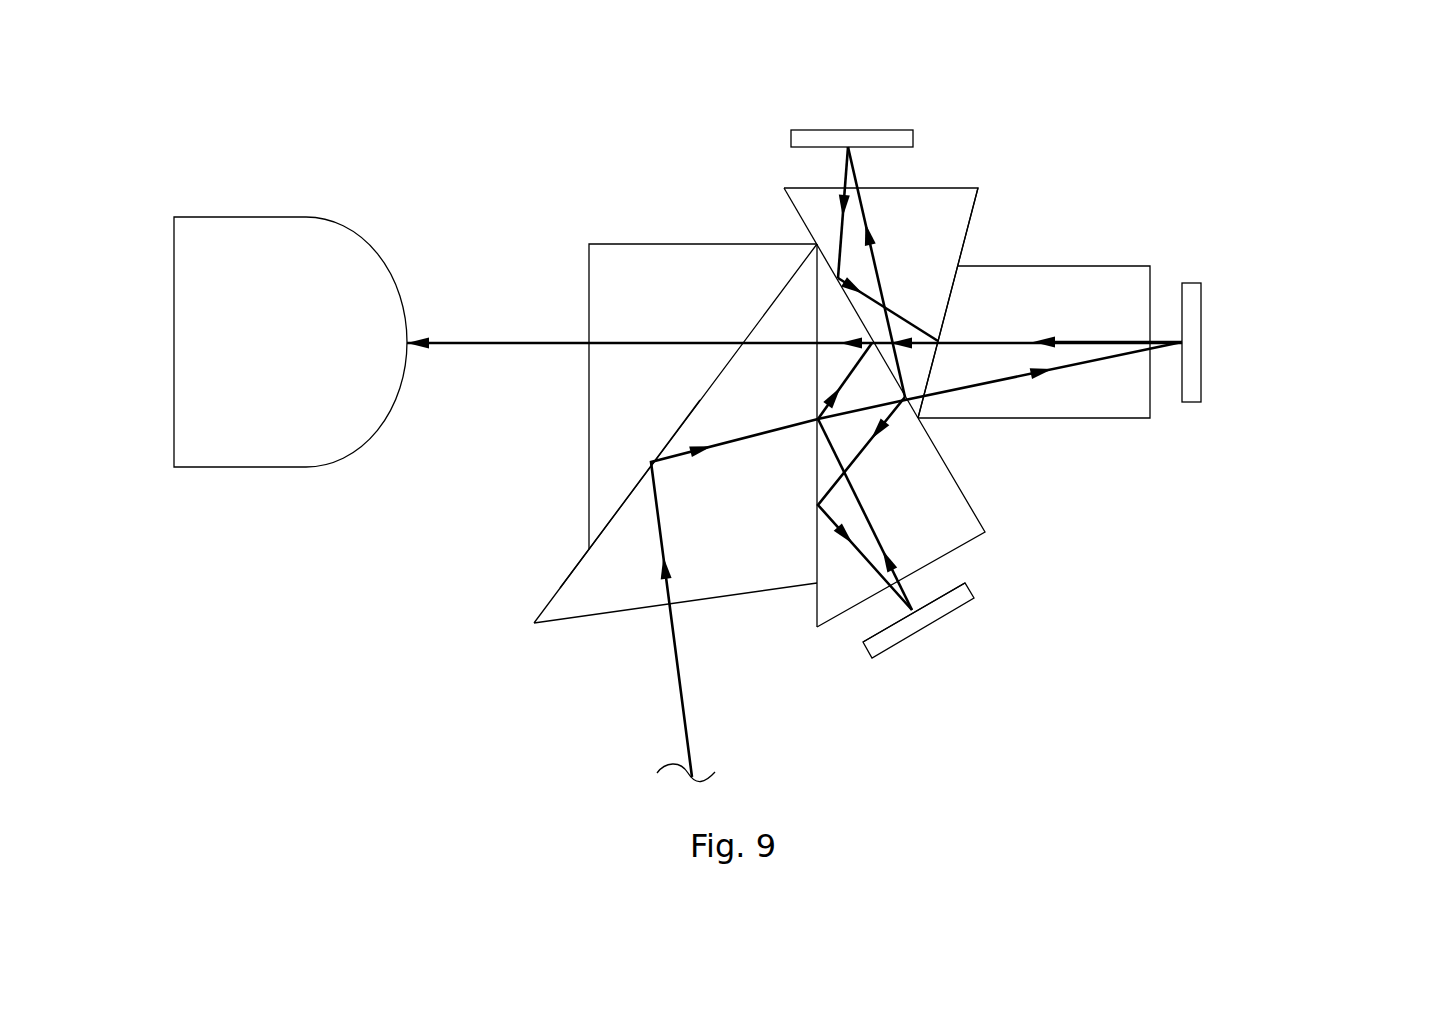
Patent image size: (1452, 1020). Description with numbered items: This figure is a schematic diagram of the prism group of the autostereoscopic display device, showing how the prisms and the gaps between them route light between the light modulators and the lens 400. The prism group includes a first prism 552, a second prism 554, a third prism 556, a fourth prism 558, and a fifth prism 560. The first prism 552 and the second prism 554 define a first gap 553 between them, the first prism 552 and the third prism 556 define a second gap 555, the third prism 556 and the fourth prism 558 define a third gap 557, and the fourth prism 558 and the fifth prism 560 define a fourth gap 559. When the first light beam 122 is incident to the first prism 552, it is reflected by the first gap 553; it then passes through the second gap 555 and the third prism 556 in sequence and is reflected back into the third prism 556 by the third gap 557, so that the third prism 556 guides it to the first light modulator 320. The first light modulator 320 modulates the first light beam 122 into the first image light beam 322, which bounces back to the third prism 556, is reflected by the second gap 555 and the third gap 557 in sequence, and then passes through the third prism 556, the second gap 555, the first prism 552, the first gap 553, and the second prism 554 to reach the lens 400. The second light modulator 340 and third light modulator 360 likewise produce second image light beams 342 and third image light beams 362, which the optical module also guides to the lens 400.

The first light beam 122 is at (674, 745).
The first light modulator 320 is at (960, 598).
The first image light beam 322 is at (914, 584).
The second light modulator 340 is at (853, 138).
The second image light beam 342 is at (836, 173).
The third light modulator 360 is at (1193, 333).
The third image light beam 362 is at (1169, 328).
The lens 400 is at (258, 391).
The first prism 552 is at (582, 580).
The first gap 553 is at (606, 503).
The second prism 554 is at (656, 288).
The second gap 555 is at (808, 553).
The third prism 556 is at (840, 582).
The third gap 557 is at (840, 307).
The fourth prism 558 is at (957, 208).
The fourth gap 559 is at (958, 313).
The fifth prism 560 is at (1082, 295).